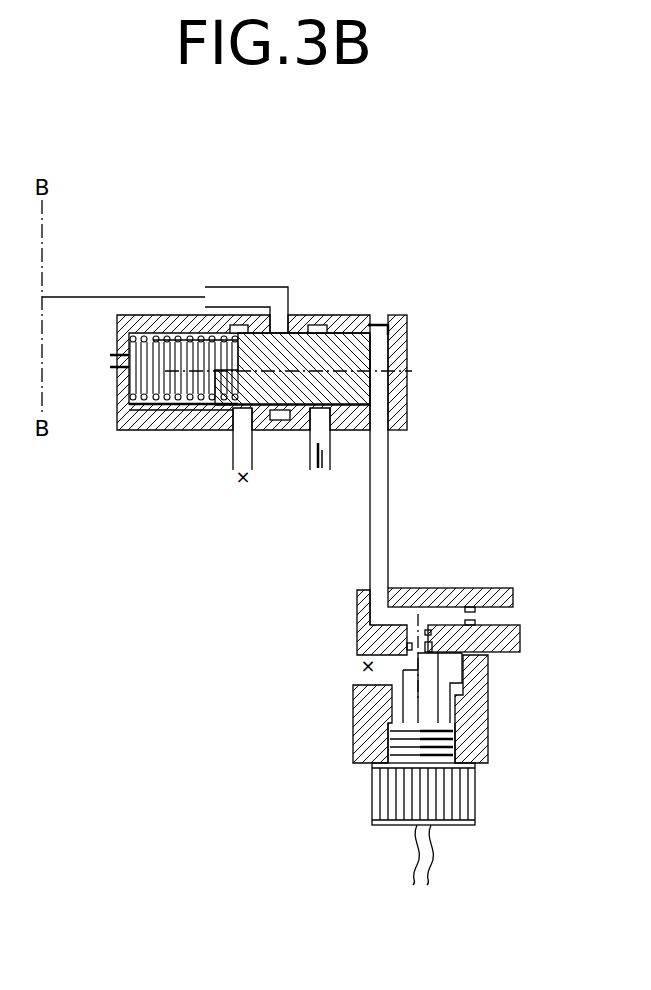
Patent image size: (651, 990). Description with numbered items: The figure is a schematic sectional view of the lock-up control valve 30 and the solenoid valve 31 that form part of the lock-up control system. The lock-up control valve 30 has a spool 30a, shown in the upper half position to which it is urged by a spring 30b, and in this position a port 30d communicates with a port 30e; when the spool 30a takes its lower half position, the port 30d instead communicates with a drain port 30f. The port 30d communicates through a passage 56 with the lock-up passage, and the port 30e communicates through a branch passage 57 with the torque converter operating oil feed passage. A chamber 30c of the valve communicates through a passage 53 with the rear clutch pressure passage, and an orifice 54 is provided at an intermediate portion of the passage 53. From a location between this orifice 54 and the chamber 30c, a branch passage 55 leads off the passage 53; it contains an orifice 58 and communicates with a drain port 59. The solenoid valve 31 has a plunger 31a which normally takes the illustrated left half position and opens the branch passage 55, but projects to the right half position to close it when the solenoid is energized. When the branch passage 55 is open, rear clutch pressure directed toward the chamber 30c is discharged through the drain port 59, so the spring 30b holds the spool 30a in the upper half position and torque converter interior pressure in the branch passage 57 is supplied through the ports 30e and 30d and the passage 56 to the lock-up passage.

The lock-up control valve 30 is at (362, 307).
The spool 30a is at (191, 418).
The spring 30b is at (133, 384).
The chamber 30c is at (385, 384).
The port 30d is at (278, 325).
The port 30e is at (311, 430).
The drain port 30f is at (243, 415).
The solenoid valve 31 is at (385, 810).
The plunger 31a is at (445, 672).
The passage 53 is at (390, 519).
The orifice 54 is at (471, 605).
The branch passage 55 is at (432, 634).
The passage 56 is at (152, 297).
The branch passage 57 is at (328, 446).
The orifice 58 is at (432, 645).
The drain port 59 is at (372, 685).